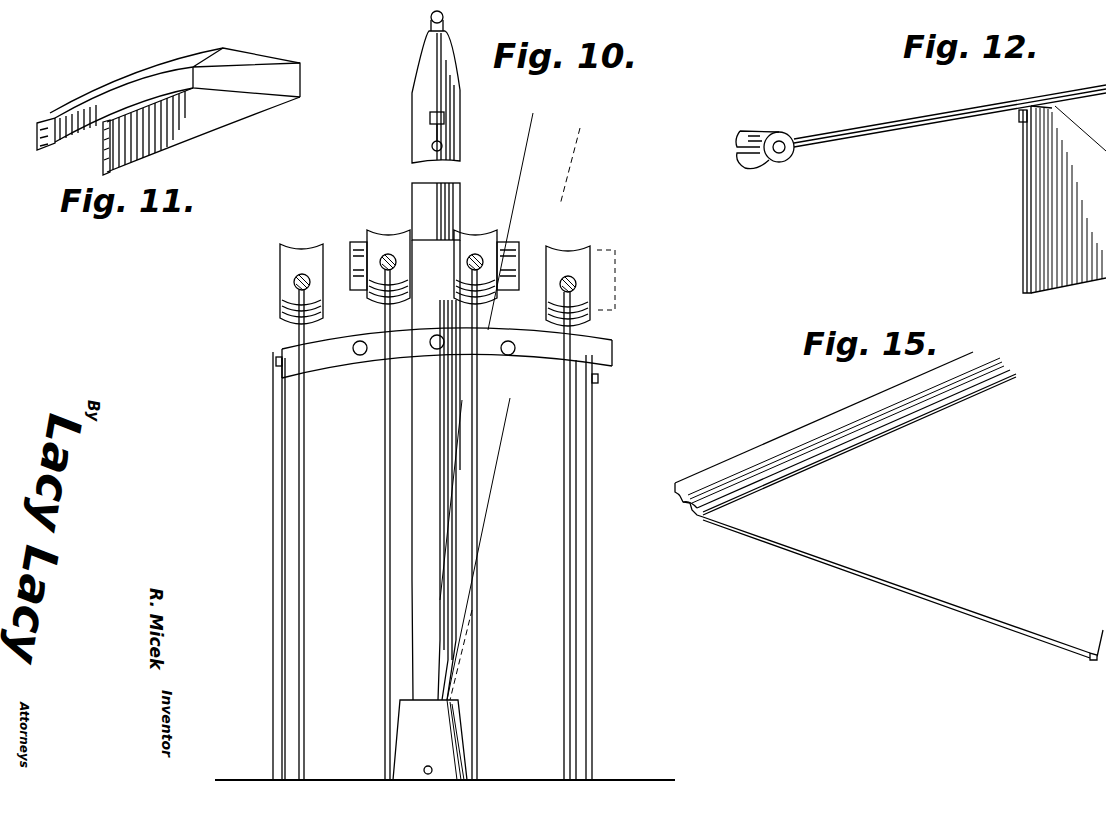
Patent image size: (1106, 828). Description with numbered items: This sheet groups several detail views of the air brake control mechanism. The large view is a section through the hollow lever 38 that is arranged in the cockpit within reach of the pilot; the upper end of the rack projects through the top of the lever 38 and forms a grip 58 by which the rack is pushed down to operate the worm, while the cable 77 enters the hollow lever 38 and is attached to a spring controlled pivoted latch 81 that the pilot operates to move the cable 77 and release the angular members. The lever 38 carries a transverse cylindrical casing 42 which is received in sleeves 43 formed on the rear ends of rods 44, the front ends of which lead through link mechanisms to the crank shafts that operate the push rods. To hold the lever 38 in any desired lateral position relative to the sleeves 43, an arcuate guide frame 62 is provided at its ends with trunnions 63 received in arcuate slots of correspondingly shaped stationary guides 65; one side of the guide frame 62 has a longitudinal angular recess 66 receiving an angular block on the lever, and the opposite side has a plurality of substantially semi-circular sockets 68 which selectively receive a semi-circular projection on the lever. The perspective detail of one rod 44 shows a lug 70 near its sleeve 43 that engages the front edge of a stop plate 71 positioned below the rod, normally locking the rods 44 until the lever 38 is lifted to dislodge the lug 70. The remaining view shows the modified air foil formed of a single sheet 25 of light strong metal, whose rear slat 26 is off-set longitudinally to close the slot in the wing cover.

In FIG. 15, the single sheet 25 is at (955, 612).
In FIG. 15, the rear slat 26 is at (806, 446).
In FIG. 10, the hollow lever 38 is at (460, 195).
In FIG. 10, the transverse cylindrical casing 42 is at (620, 250).
In FIG. 10, the sleeve 43 is at (300, 250).
In FIG. 12, the sleeve 43 is at (757, 128).
In FIG. 10, the rod 44 is at (294, 284).
In FIG. 12, the rod 44 is at (940, 124).
In FIG. 10, the grip 58 is at (447, 19).
In FIG. 11, the arcuate guide frame 62 is at (208, 122).
In FIG. 10, the arcuate guide frame 62 is at (380, 335).
In FIG. 10, the trunnion 63 is at (276, 362).
In FIG. 10, the guide 65 is at (272, 528).
In FIG. 11, the longitudinal angular recess 66 is at (40, 123).
In FIG. 11, the semi-circular socket 68 is at (103, 150).
In FIG. 10, the semi-circular socket 68 is at (360, 356).
In FIG. 12, the lug 70 is at (1022, 122).
In FIG. 10, the stop plate 71 is at (384, 527).
In FIG. 12, the stop plate 71 is at (1033, 196).
In FIG. 10, the cable 77 is at (430, 197).
In FIG. 10, the spring controlled pivoted latch 81 is at (432, 45).